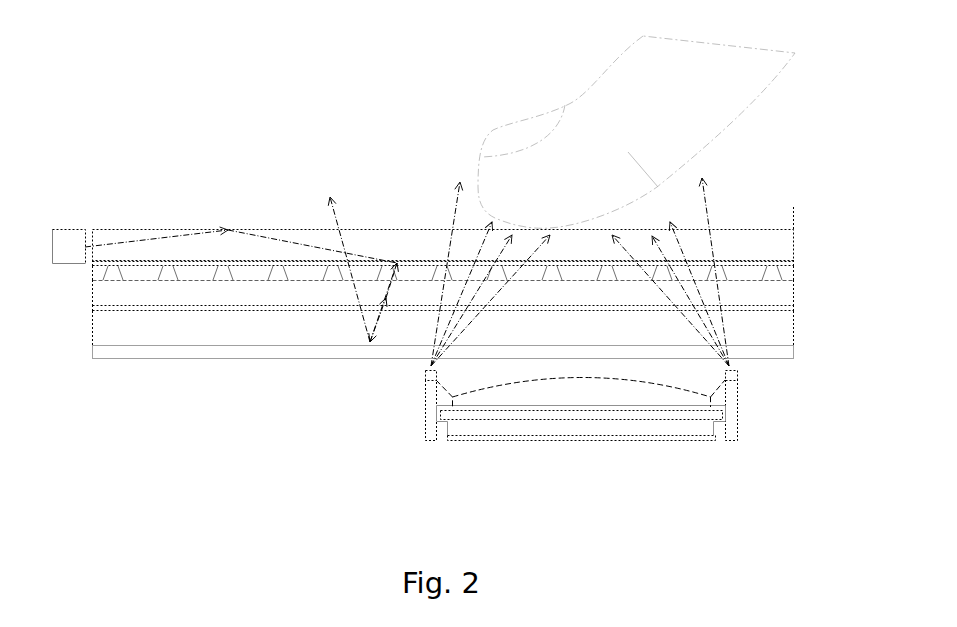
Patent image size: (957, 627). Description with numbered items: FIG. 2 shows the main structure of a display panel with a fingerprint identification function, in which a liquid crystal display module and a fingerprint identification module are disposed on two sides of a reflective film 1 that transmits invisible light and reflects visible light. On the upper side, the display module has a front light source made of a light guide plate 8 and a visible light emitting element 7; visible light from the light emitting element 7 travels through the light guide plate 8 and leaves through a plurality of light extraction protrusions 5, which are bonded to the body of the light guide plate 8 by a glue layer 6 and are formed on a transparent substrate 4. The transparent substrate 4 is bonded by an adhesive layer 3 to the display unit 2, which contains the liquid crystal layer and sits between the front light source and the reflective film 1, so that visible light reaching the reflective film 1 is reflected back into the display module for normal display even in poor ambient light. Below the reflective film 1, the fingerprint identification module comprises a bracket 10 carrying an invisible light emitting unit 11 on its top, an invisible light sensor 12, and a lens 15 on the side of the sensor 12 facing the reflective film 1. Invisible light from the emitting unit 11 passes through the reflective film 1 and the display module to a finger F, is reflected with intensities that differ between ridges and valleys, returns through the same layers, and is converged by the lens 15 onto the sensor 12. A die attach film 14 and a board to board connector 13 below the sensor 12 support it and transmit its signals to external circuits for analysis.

The reflective film 1 is at (142, 357).
The display unit 2 is at (108, 325).
The adhesive layer 3 is at (98, 308).
The transparent substrate 4 is at (105, 293).
The light extraction protrusions 5 is at (112, 273).
The glue layer 6 is at (92, 265).
The visible light emitting element 7 is at (67, 242).
The light guide plate 8 is at (120, 237).
The bracket 10 is at (730, 400).
The invisible light emitting unit 11 is at (737, 377).
The invisible light sensor 12 is at (693, 415).
The board to board connector 13 is at (672, 425).
The die attach film 14 is at (637, 438).
The lens 15 is at (603, 395).
The finger F is at (553, 167).